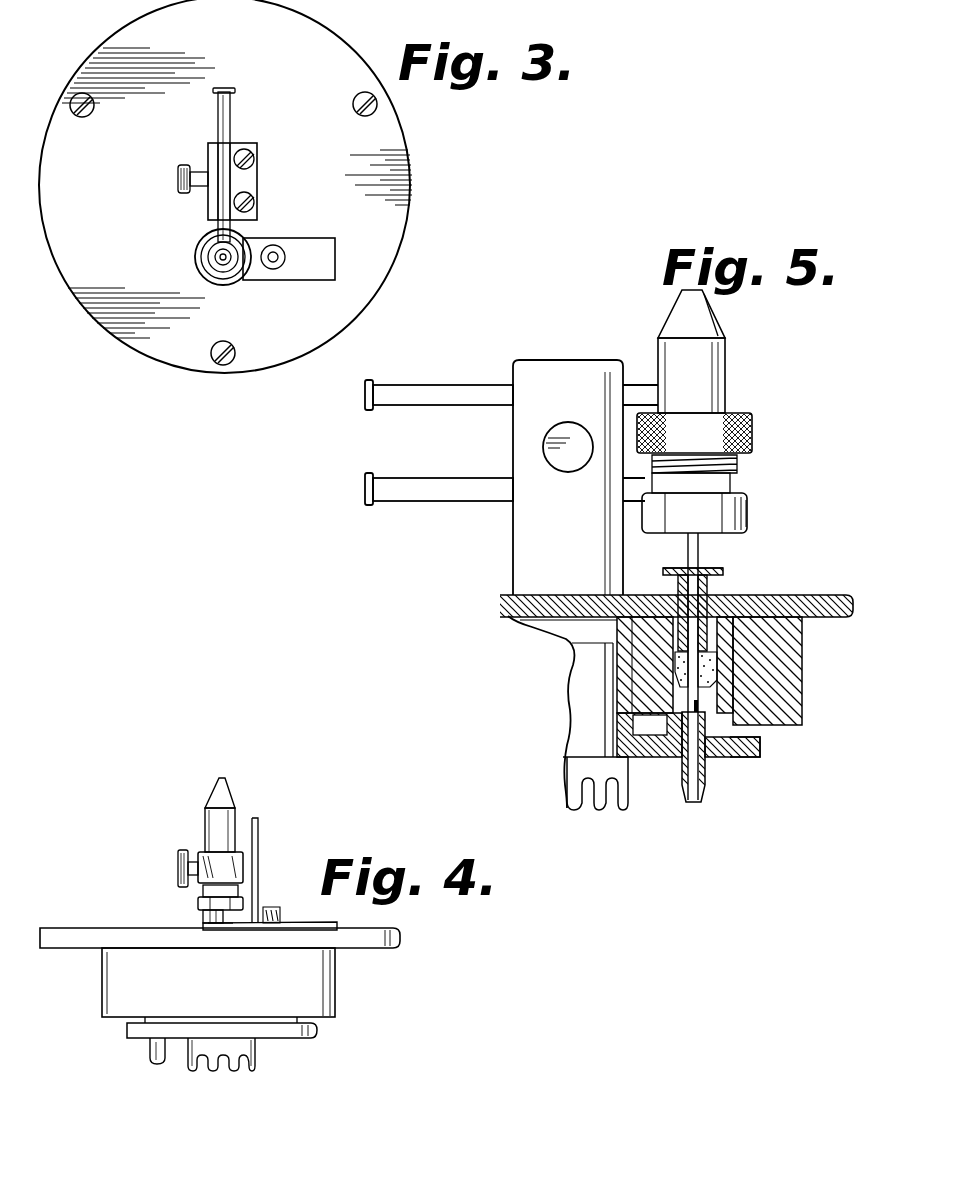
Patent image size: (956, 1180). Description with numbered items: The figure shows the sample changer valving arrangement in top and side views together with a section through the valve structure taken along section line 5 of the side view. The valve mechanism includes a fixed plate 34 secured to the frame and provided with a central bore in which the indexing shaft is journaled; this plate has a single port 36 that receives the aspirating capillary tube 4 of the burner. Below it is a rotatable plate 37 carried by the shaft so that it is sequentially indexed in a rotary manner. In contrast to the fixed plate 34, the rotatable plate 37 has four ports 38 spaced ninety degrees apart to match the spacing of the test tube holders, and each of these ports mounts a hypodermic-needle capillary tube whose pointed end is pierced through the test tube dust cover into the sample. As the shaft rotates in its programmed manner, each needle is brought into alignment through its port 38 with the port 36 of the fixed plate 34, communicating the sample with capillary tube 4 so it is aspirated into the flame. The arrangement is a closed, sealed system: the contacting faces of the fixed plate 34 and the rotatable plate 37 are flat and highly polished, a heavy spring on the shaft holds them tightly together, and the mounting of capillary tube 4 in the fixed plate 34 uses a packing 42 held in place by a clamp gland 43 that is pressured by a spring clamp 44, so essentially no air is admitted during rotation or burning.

In FIG. 5, the aspirating capillary tube 4 is at (699, 552).
In FIG. 4, the aspirating capillary tube 4 is at (203, 920).
In FIG. 3, the section line 5- 5 is at (290, 190).
In FIG. 5, the section line 5- 5 is at (764, 367).
In FIG. 4, the section line 5- 5 is at (222, 778).
In FIG. 5, the fixed plate 34 is at (782, 686).
In FIG. 5, the port 36 is at (700, 700).
In FIG. 5, the rotatable plate 37 is at (748, 752).
In FIG. 5, the ports 38 is at (692, 786).
In FIG. 5, the packing 42 is at (713, 667).
In FIG. 5, the clamp gland 43 is at (706, 592).
In FIG. 4, the clamp gland 43 is at (224, 931).
In FIG. 3, the spring clamp 44 is at (330, 247).
In FIG. 5, the spring clamp 44 is at (668, 568).
In FIG. 4, the spring clamp 44 is at (307, 925).